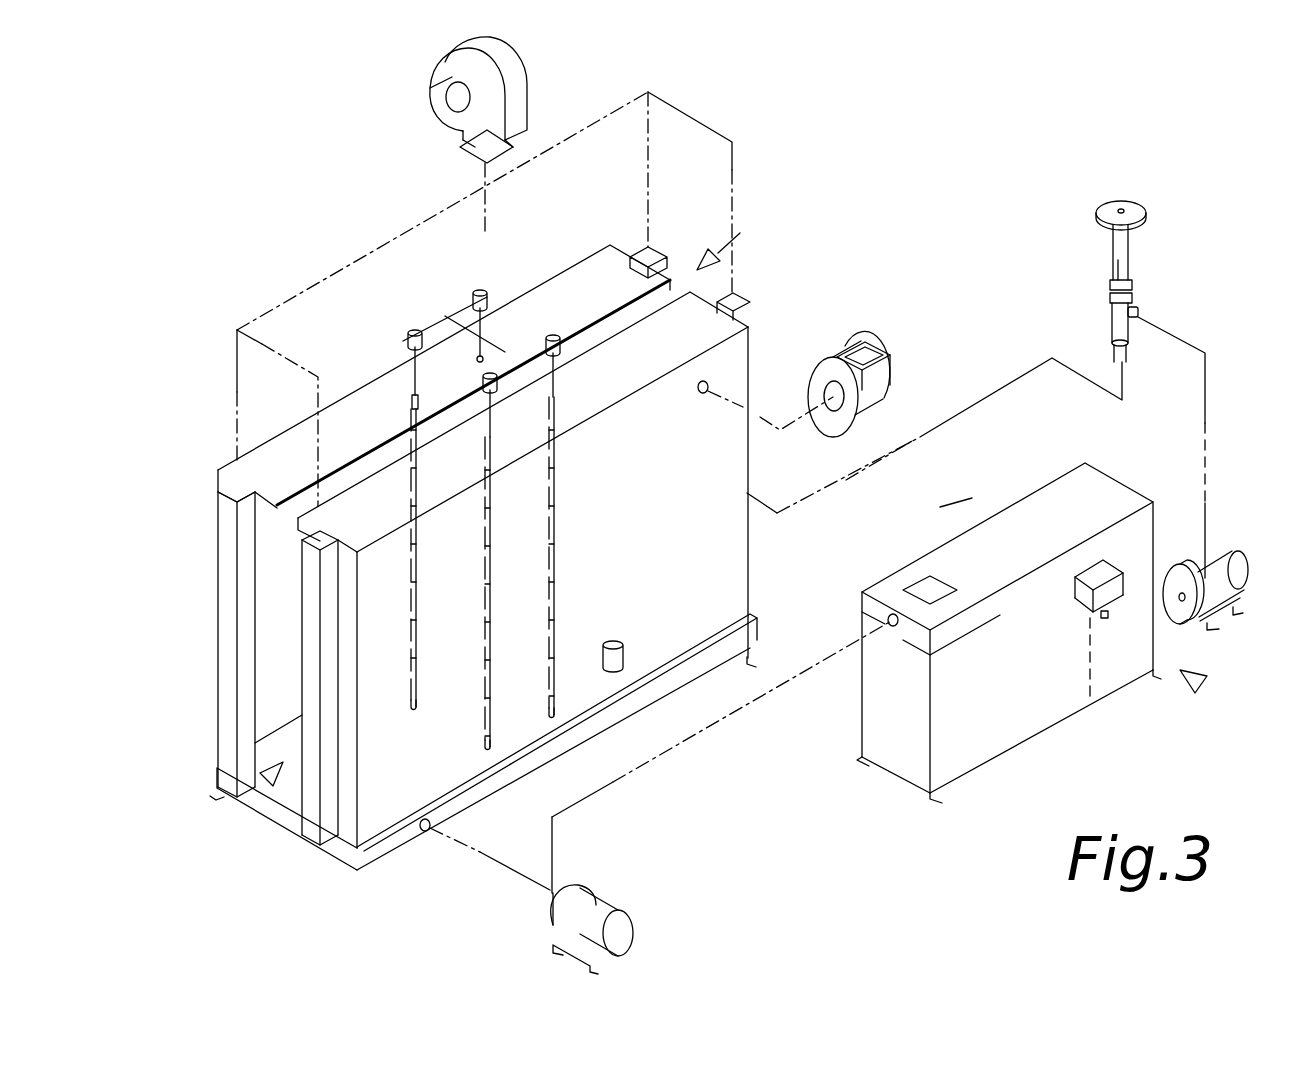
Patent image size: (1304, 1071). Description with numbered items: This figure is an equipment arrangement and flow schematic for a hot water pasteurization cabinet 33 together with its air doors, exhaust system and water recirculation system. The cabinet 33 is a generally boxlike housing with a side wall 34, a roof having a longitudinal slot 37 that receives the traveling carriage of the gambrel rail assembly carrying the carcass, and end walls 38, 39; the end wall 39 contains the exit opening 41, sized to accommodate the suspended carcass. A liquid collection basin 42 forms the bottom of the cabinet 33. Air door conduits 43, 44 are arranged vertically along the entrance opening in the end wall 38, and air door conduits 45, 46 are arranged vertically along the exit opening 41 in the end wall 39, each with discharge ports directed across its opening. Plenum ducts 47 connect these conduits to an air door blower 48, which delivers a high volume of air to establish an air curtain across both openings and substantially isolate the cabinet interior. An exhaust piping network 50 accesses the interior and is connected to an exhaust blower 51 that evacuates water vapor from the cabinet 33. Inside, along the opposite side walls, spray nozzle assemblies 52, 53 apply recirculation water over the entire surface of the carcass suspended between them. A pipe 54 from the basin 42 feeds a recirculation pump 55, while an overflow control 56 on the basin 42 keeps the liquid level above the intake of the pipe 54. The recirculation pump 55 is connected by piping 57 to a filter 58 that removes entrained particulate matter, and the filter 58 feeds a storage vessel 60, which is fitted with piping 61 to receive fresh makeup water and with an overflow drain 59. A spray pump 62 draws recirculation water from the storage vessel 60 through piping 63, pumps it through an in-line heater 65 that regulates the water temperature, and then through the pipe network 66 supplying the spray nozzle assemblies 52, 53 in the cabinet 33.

The hot water pasteurization cabinet 33 is at (547, 293).
The side wall 34 is at (752, 591).
The longitudinal slot 37 is at (740, 235).
The end wall 38 is at (751, 462).
The end wall 39 is at (345, 810).
The exit opening 41 is at (262, 778).
The liquid collection basin 42 is at (402, 838).
The air door conduit 43 is at (665, 260).
The air door conduit 44 is at (752, 303).
The air door conduit 45 is at (230, 543).
The air door conduit 46 is at (313, 615).
The plenum ducts 47 is at (641, 149).
The air door blower 48 is at (440, 98).
The exhaust piping network 50 is at (760, 421).
The exhaust blower 51 is at (873, 393).
The spray nozzle assembly 52 is at (547, 622).
The spray nozzle assembly 53 is at (412, 405).
The pipe 54 is at (510, 872).
The recirculation pump 55 is at (600, 920).
The overflow control 56 is at (614, 657).
The piping 57 is at (817, 670).
The filter 58 is at (920, 582).
The overflow drain 59 is at (1075, 585).
The storage vessel 60 is at (1207, 692).
The piping 61 is at (927, 526).
The spray pump 62 is at (1227, 573).
The piping 63 is at (1205, 407).
The in-line heater 65 is at (1140, 262).
The pipe network 66 is at (1030, 368).